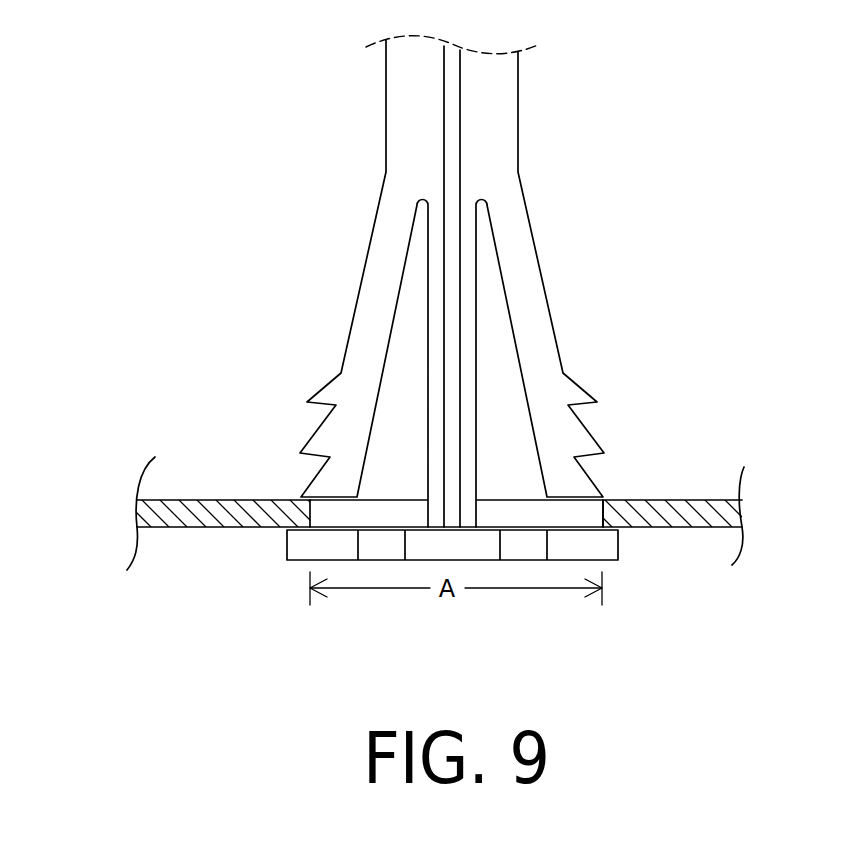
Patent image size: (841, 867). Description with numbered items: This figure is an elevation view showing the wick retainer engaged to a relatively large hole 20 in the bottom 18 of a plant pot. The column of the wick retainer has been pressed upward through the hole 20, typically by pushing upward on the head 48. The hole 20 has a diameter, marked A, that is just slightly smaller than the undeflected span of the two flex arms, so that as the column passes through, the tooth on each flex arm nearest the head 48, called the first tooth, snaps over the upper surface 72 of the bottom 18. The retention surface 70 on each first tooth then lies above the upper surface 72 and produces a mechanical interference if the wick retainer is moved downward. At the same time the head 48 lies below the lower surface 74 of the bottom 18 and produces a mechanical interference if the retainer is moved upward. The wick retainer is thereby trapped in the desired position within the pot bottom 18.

The bottom 18 is at (198, 527).
The hole 20 is at (345, 515).
The head 48 is at (618, 560).
The retention surface 70 is at (582, 497).
The upper surface 72 is at (685, 499).
The lower surface 74 is at (648, 527).